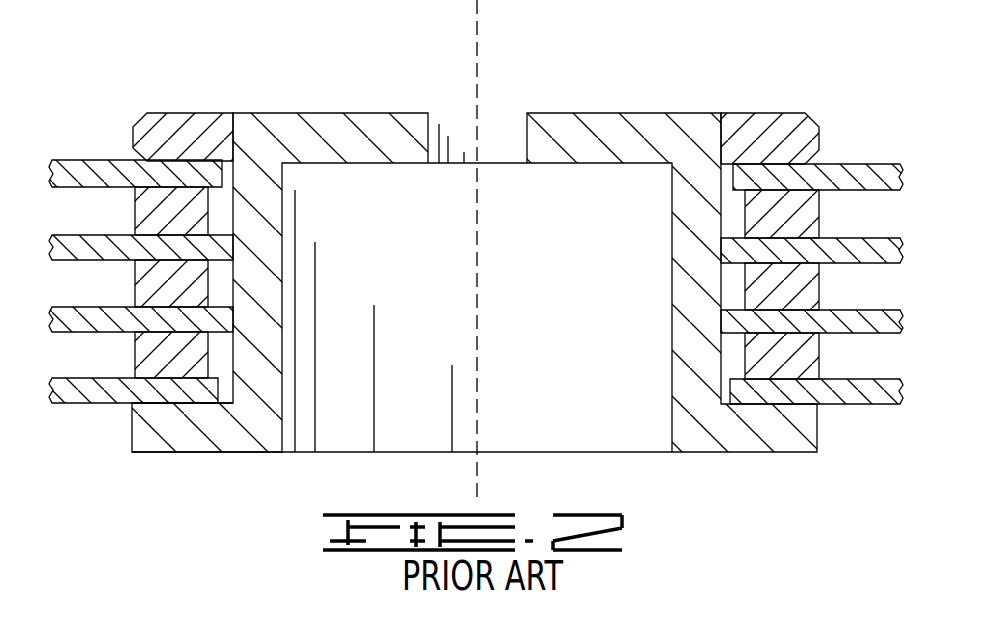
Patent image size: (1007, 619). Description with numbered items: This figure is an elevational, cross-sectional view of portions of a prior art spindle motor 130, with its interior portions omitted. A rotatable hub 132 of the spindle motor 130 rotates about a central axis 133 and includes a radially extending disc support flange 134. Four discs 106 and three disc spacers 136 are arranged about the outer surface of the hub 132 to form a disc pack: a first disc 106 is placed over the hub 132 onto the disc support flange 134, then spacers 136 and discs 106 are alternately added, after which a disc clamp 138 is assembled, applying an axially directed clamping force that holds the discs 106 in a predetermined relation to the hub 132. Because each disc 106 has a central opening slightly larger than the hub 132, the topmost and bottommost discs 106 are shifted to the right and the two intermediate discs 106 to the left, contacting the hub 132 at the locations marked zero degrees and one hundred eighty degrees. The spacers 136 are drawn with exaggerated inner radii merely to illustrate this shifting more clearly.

The spindle motor 130 is at (645, 90).
The rotatable hub 132 is at (377, 122).
The central axis 133 is at (477, 312).
The disc support flange 134 is at (210, 443).
The disc spacer 136 is at (155, 214).
The disc clamp 138 is at (197, 118).
The disc 106 is at (833, 243).